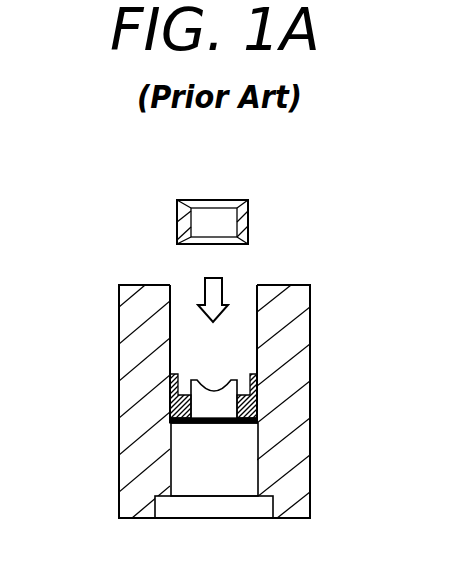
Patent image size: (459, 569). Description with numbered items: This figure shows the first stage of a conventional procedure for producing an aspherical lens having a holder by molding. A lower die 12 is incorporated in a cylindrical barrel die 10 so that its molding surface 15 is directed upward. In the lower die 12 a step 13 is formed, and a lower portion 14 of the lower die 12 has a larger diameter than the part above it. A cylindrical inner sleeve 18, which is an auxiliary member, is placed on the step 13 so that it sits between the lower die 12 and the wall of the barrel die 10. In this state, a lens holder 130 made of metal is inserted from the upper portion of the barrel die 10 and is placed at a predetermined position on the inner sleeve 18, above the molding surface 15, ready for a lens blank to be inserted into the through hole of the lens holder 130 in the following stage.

The barrel die 10 is at (288, 338).
The lower die 12 is at (197, 403).
The step 13 is at (170, 421).
The lower portion 14 is at (202, 475).
The molding surface 15 is at (203, 371).
The inner sleeve 18 is at (262, 408).
The lens holder 130 is at (248, 213).